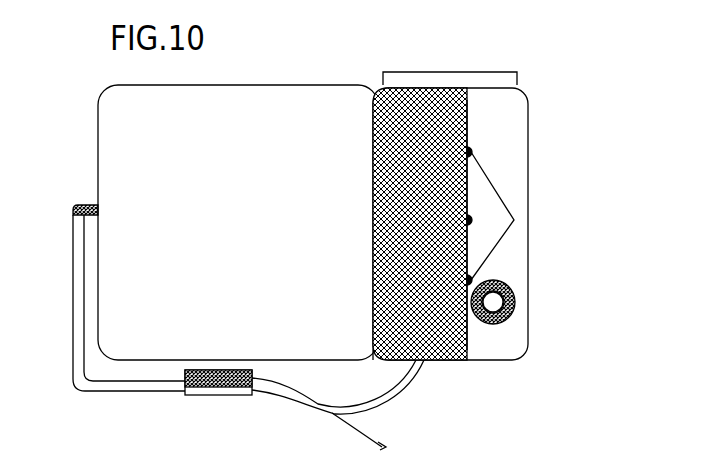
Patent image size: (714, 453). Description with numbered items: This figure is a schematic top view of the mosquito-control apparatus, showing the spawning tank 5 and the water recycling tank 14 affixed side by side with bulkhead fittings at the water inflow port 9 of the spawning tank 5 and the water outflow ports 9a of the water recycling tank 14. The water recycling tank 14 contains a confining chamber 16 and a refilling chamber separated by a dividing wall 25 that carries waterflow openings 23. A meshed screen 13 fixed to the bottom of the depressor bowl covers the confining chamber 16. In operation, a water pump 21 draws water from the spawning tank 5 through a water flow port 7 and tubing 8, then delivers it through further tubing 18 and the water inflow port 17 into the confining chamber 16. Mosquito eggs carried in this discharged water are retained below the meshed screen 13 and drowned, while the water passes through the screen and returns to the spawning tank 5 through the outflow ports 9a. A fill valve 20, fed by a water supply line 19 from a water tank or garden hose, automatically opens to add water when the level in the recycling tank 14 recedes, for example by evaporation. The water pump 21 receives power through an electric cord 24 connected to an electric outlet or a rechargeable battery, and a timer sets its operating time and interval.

The spawning tank 5 is at (125, 118).
The water flow port 7 is at (73, 212).
The tubing 8 is at (73, 275).
The water inflow port 9 is at (372, 177).
The water outflow port 9a is at (470, 175).
The meshed screen 13 is at (467, 129).
The water recycling tank 14 is at (443, 72).
The confining chamber 16 is at (513, 157).
The water inflow port 17 is at (407, 362).
The tubing 18 is at (340, 411).
The water supply line 19 is at (503, 302).
The fill valve 20 is at (515, 290).
The water pump 21 is at (198, 396).
The waterflow openings 23 is at (470, 220).
The electric cord 24 is at (345, 430).
The dividing wall 25 is at (467, 328).